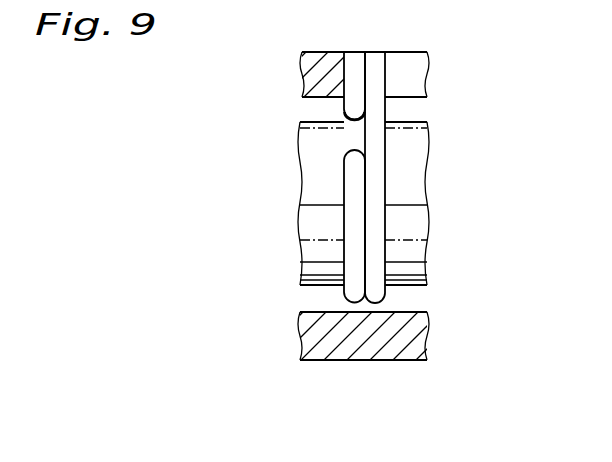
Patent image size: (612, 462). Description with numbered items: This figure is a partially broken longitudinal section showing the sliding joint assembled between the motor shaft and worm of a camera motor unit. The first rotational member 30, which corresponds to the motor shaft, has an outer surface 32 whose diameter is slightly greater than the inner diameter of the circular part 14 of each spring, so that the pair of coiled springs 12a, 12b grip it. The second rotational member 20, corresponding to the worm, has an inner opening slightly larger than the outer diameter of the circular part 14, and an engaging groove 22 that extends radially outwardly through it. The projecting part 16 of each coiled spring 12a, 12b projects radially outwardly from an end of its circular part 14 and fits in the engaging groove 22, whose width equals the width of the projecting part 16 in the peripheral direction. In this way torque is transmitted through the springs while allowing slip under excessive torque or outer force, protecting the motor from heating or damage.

The second rotational member 20 is at (320, 52).
The engaging groove 22 is at (412, 75).
The projecting part 16 is at (348, 82).
The first rotational member 30 is at (410, 122).
The outer surface 32 is at (412, 182).
The coiled spring 12a is at (353, 232).
The coiled spring 12b is at (372, 252).
The circular part 14 is at (347, 288).